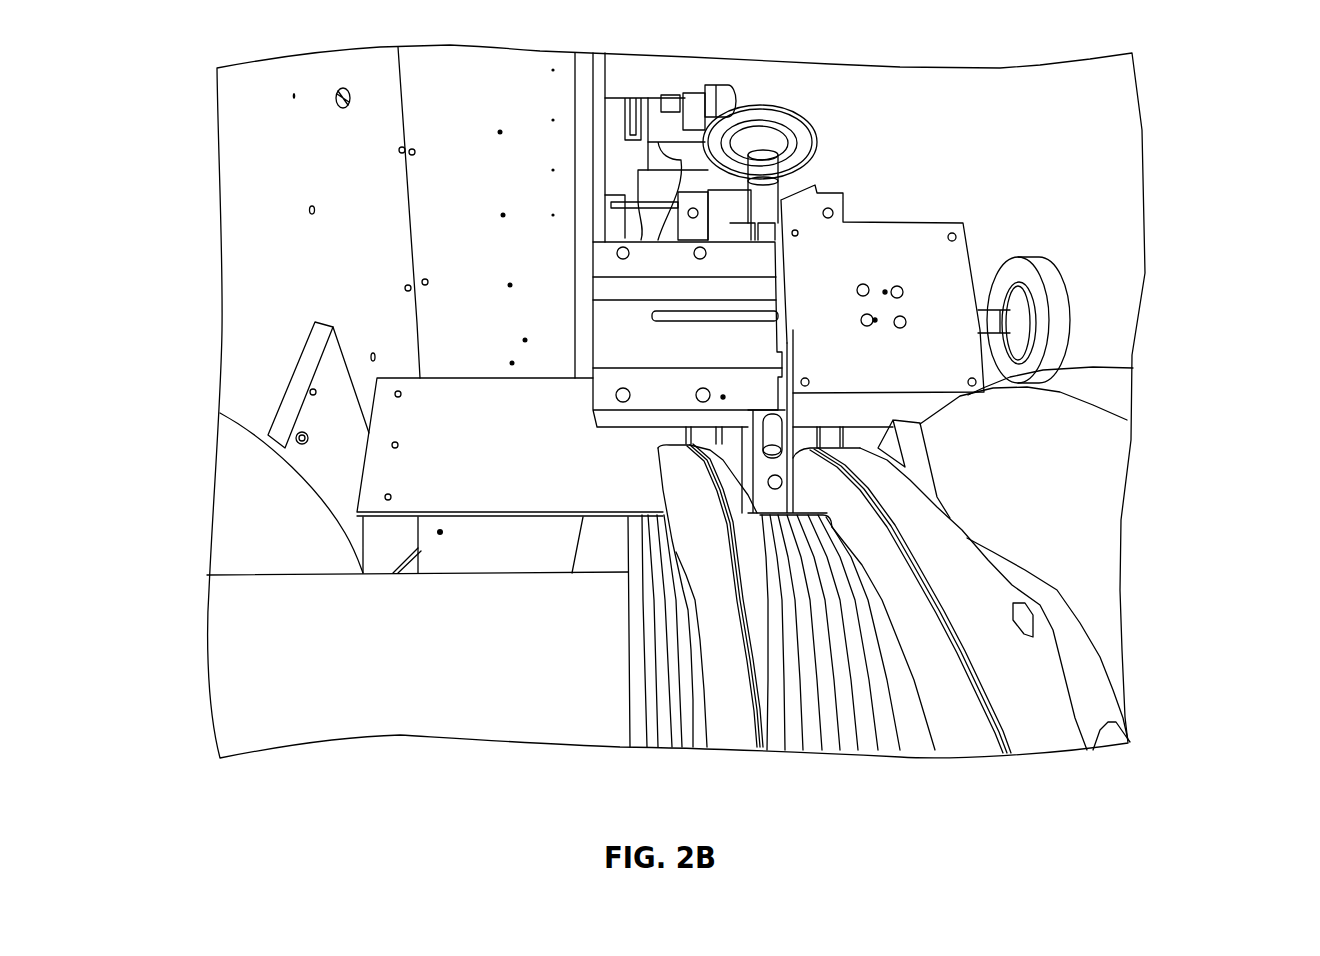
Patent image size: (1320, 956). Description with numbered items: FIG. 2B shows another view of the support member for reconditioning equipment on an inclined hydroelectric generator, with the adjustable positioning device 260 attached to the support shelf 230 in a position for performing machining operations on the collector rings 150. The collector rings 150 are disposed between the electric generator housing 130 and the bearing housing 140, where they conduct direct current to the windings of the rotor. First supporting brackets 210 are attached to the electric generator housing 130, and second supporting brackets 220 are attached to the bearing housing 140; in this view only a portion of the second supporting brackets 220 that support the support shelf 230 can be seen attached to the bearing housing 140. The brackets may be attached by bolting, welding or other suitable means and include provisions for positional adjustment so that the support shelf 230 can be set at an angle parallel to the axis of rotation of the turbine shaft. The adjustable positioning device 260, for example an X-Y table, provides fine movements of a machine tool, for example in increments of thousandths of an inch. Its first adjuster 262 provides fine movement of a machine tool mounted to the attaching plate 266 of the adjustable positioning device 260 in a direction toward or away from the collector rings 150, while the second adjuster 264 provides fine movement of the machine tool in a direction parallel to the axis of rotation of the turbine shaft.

The electric generator housing 130 is at (355, 197).
The first supporting brackets 210 is at (315, 313).
The support shelf 230 is at (472, 378).
The adjustable positioning device 260 is at (580, 270).
The first adjuster 262 is at (677, 110).
The second adjuster 264 is at (1045, 268).
The attaching plate 266 is at (870, 268).
The second supporting brackets 220 is at (913, 468).
The bearing housing 140 is at (1066, 517).
The collector rings 150 is at (715, 642).